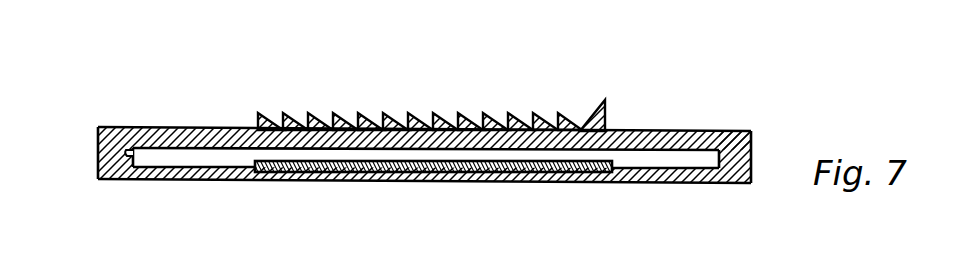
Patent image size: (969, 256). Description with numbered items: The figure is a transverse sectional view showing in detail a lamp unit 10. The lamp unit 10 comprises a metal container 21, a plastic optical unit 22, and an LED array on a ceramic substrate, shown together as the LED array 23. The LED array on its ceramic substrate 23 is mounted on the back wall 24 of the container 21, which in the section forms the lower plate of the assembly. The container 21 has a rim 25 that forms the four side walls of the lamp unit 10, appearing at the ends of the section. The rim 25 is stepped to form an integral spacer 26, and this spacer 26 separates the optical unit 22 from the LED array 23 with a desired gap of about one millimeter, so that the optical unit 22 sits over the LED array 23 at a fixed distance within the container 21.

The lamp unit 10 is at (404, 82).
The metal container 21 is at (138, 180).
The plastic optical unit 22 is at (173, 128).
The LED array on ceramic substrate 23 is at (277, 180).
The back wall 24 is at (663, 172).
The rim 25 is at (98, 133).
The integral spacer 26 is at (127, 153).